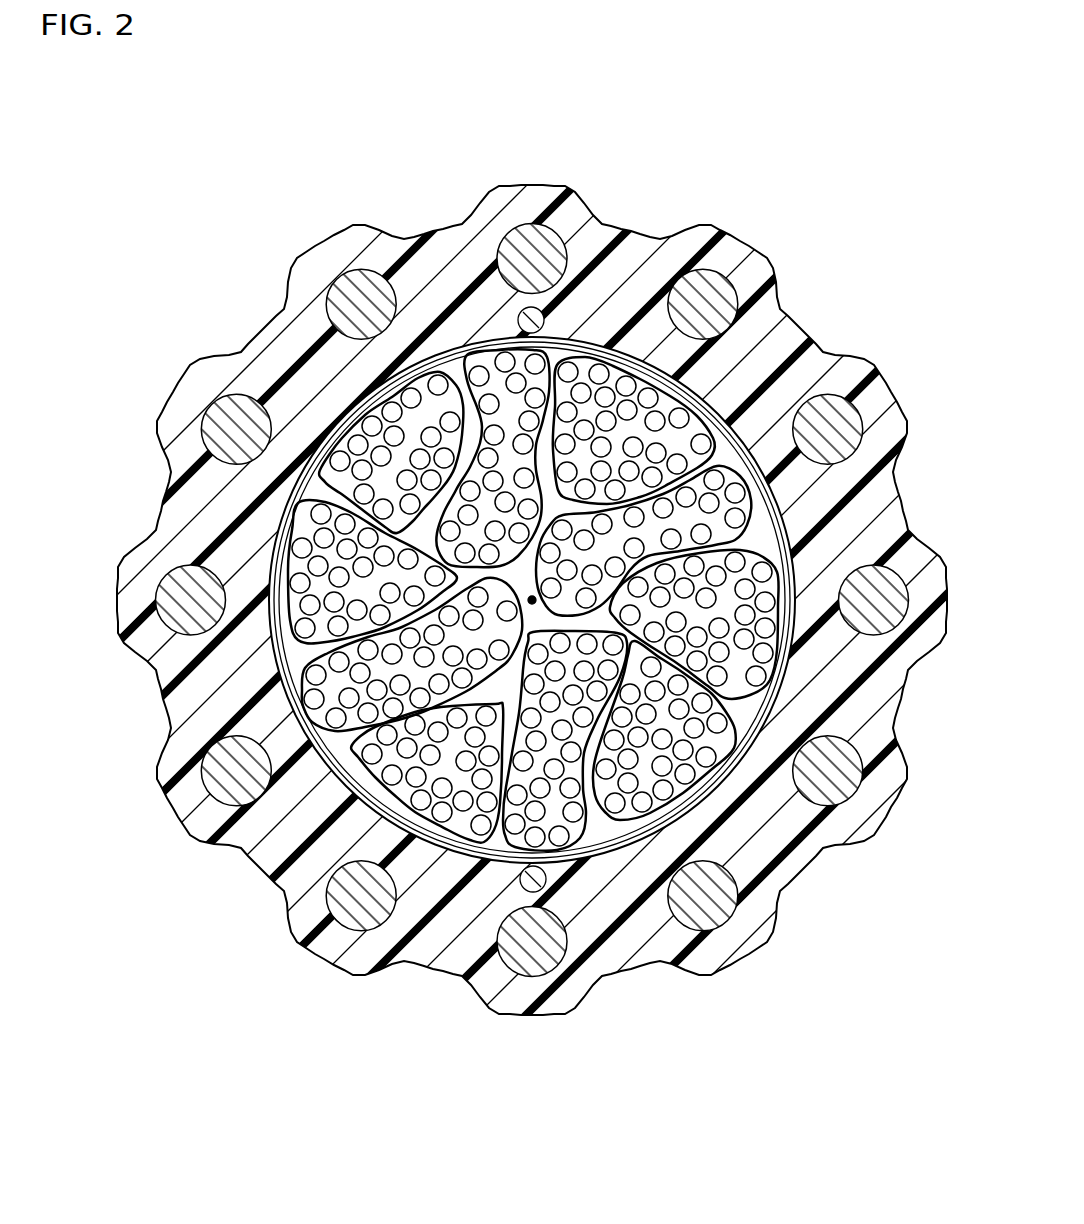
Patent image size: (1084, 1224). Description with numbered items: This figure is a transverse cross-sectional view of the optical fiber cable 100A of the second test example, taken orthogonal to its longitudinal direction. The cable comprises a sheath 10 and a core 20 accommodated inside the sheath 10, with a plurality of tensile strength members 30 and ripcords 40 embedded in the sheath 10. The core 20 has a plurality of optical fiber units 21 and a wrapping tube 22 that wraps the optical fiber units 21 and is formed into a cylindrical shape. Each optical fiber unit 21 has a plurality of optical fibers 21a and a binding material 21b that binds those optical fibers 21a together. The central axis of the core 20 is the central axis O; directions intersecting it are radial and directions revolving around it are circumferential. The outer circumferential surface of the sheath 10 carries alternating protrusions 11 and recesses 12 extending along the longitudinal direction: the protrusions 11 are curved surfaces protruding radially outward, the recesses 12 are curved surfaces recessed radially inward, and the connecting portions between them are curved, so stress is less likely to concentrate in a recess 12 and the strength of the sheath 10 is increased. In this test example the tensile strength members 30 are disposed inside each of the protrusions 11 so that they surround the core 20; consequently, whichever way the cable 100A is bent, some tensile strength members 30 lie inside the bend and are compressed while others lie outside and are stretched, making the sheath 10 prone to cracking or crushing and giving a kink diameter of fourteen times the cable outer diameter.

The optical fiber cable 100A is at (240, 143).
The sheath 10 is at (542, 600).
The protrusion 11 is at (755, 264).
The recess 12 is at (793, 320).
The tensile strength member 30 is at (852, 417).
The ripcord 40 is at (545, 323).
The core 20 is at (476, 722).
The wrapping tube 22 is at (370, 800).
The optical fiber unit 21 is at (533, 728).
The optical fiber 21a is at (482, 832).
The binding material 21b is at (438, 838).
The central axis O is at (532, 600).